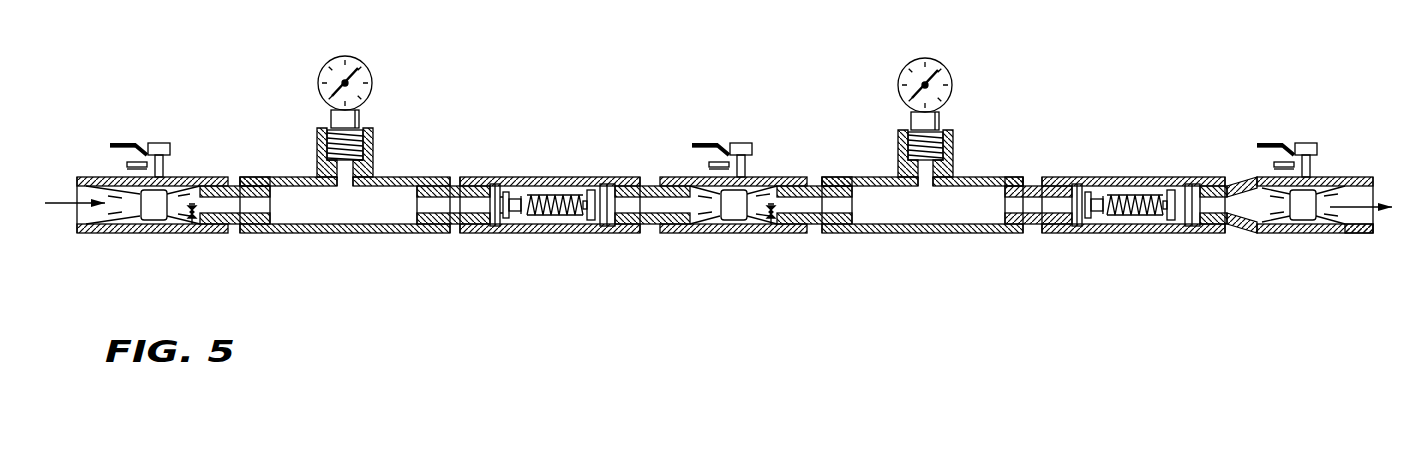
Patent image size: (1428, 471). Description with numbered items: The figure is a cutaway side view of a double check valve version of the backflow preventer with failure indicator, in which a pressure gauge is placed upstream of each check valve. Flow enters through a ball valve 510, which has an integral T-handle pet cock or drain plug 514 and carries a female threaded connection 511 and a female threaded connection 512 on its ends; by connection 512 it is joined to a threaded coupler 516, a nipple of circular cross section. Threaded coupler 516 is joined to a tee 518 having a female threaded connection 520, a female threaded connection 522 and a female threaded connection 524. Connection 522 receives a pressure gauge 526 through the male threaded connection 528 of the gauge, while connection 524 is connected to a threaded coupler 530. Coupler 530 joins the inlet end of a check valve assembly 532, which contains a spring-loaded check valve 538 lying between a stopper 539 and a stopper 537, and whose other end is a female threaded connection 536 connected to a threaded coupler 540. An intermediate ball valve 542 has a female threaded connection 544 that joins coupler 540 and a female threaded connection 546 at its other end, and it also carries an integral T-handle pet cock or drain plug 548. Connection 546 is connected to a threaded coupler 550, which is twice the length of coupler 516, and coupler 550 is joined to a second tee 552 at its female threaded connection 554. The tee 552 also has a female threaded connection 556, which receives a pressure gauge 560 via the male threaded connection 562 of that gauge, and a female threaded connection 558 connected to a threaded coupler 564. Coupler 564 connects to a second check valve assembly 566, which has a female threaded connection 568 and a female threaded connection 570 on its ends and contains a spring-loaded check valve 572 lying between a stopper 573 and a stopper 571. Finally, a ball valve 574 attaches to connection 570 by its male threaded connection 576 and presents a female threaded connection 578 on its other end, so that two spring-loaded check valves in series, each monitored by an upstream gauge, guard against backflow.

The ball valve 510 is at (152, 240).
The female threaded connection 511 is at (90, 176).
The female threaded connection 512 is at (206, 184).
The drain plug 514 is at (196, 235).
The threaded coupler 516 is at (233, 235).
The tee 518 is at (343, 240).
The female threaded connection 520 is at (260, 177).
The female threaded connection 522 is at (315, 160).
The female threaded connection 524 is at (424, 177).
The pressure gauge 526 is at (351, 54).
The male threaded connection 528 is at (362, 132).
The threaded coupler 530 is at (462, 235).
The check valve assembly 532 is at (545, 172).
The female threaded connection 536 is at (666, 177).
The stopper 537 is at (610, 177).
The spring-loaded check valve 538 is at (544, 235).
The stopper 539 is at (508, 177).
The threaded coupler 540 is at (648, 235).
The ball valve 542 is at (733, 240).
The female threaded connection 544 is at (701, 177).
The female threaded connection 546 is at (796, 177).
The drain plug 548 is at (773, 235).
The threaded coupler 550 is at (822, 235).
The tee 552 is at (900, 240).
The female threaded connection 554 is at (845, 177).
The female threaded connection 556 is at (960, 165).
The female threaded connection 558 is at (1020, 177).
The pressure gauge 560 is at (931, 56).
The male threaded connection 562 is at (955, 135).
The threaded coupler 564 is at (1034, 235).
The check valve assembly 566 is at (1137, 172).
The female threaded connection 568 is at (1062, 177).
The female threaded connection 570 is at (1214, 235).
The stopper 571 is at (1187, 177).
The spring-loaded check valve 572 is at (1154, 235).
The stopper 573 is at (1081, 235).
The ball valve 574 is at (1299, 240).
The male threaded connection 576 is at (1241, 177).
The female threaded connection 578 is at (1358, 235).